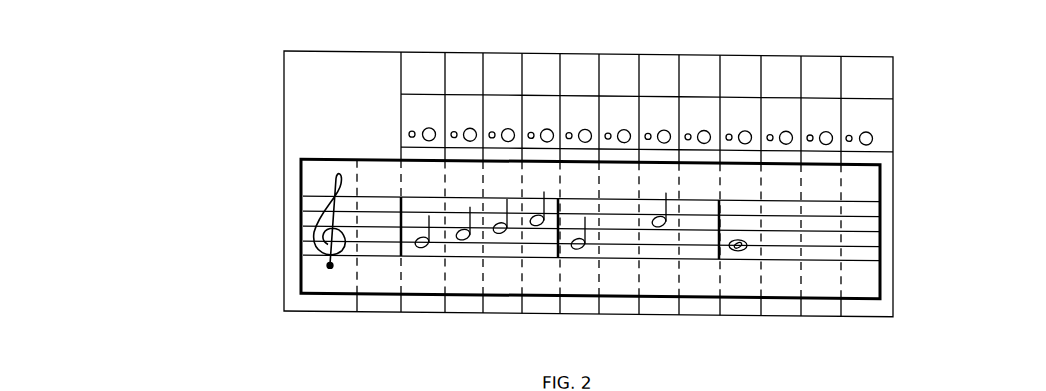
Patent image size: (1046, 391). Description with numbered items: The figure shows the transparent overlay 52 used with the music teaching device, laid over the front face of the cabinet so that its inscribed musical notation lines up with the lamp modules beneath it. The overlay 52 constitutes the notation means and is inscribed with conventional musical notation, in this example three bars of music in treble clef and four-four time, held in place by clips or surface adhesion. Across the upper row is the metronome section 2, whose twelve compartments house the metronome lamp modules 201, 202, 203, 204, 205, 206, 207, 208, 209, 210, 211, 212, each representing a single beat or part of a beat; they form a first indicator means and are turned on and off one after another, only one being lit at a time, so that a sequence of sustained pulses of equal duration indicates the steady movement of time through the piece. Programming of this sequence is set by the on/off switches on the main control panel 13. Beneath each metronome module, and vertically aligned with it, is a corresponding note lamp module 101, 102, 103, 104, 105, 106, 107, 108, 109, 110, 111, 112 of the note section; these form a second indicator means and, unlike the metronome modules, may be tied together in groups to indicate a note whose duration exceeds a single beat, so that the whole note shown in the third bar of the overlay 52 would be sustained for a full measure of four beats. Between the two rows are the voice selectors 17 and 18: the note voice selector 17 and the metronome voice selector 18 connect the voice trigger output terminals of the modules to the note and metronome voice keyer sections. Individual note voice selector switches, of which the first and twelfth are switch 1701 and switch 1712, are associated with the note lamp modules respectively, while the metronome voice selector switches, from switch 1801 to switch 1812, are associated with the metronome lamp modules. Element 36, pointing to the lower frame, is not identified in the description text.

The main control panel 13 is at (282, 80).
The metronome section 2 is at (402, 72).
The note voice selector 17 is at (393, 119).
The metronome voice selector 18 is at (386, 119).
The note voice selector switch 1701 is at (427, 140).
The metronome voice selector switch 1801 is at (412, 129).
The note voice selector switch 1712 is at (873, 134).
The metronome voice selector switch 1812 is at (853, 125).
The metronome lamp module 201 is at (421, 51).
The metronome lamp module 202 is at (460, 49).
The metronome lamp module 203 is at (502, 47).
The metronome lamp module 204 is at (537, 51).
The metronome lamp module 205 is at (578, 48).
The metronome lamp module 206 is at (610, 51).
The metronome lamp module 207 is at (663, 46).
The metronome lamp module 208 is at (695, 51).
The metronome lamp module 209 is at (742, 48).
The metronome lamp module 210 is at (775, 51).
The metronome lamp module 211 is at (815, 48).
The metronome lamp module 212 is at (863, 51).
The note lamp module 101 is at (421, 312).
The note lamp module 102 is at (451, 307).
The note lamp module 103 is at (502, 313).
The note lamp module 104 is at (535, 306).
The note lamp module 105 is at (580, 312).
The note lamp module 106 is at (607, 305).
The note lamp module 107 is at (658, 313).
The note lamp module 108 is at (698, 306).
The note lamp module 109 is at (740, 314).
The note lamp module 110 is at (795, 308).
The note lamp module 111 is at (827, 307).
The note lamp module 112 is at (852, 308).
The music display window 36 is at (323, 303).
The transparent overlay 52 is at (740, 293).